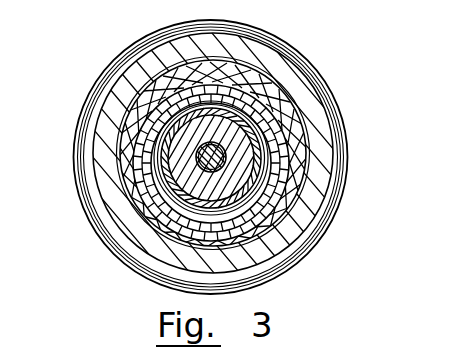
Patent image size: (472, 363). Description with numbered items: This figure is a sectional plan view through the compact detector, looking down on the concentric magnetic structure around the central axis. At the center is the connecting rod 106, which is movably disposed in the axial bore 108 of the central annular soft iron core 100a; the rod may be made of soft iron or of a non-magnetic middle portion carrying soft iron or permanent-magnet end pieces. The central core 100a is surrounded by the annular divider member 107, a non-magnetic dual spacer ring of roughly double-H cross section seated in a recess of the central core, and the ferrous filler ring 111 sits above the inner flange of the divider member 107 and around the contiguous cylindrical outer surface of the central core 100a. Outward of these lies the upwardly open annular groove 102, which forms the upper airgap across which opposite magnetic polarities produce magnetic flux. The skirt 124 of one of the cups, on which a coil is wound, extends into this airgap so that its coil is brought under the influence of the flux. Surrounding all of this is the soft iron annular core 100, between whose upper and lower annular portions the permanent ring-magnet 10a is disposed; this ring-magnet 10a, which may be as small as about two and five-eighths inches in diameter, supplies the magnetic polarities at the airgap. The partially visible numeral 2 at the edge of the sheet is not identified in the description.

The permanent ring-magnet 10a is at (325, 144).
The soft iron annular core 100 is at (243, 240).
The axial bore 108 is at (285, 183).
The central annular soft iron core 100a is at (138, 200).
The skirt 124 is at (228, 212).
The annular divider member 107 is at (262, 170).
The ferrous filler ring 111 is at (152, 164).
The upwardly open annular groove 102 is at (225, 169).
The connecting rod 106 is at (218, 141).
The cable 2 is at (10, 119).